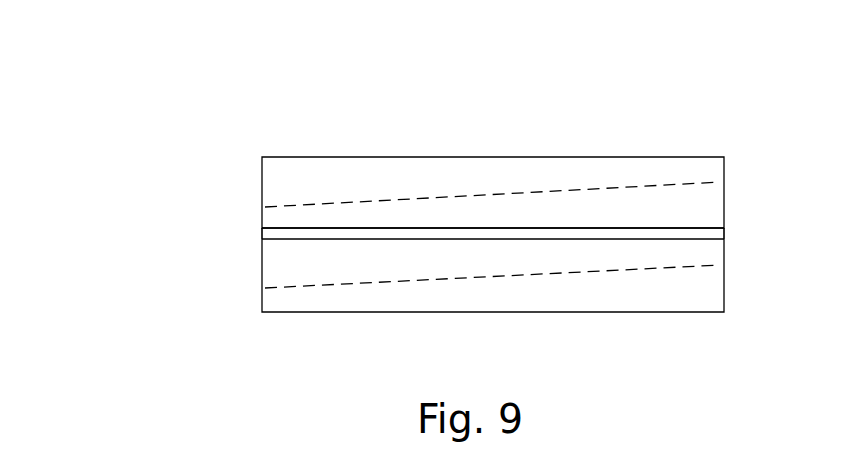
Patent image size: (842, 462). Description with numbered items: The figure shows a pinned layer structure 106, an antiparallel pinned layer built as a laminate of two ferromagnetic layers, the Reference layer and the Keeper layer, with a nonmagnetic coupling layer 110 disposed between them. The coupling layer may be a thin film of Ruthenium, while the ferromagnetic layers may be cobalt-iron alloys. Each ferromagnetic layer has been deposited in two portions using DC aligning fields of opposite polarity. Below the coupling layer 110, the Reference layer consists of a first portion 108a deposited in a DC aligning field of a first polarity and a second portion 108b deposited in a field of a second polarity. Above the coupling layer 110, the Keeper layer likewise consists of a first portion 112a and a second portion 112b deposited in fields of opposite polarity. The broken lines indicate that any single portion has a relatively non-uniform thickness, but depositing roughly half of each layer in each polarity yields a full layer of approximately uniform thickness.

The pinned layer structure 106 is at (178, 92).
The second portion of Keeper layer 112b is at (262, 172).
The first portion of Keeper layer 112a is at (262, 215).
The nonmagnetic coupling layer 110 is at (262, 232).
The second portion of Reference layer 108b is at (262, 256).
The first portion of Reference layer 108a is at (262, 307).